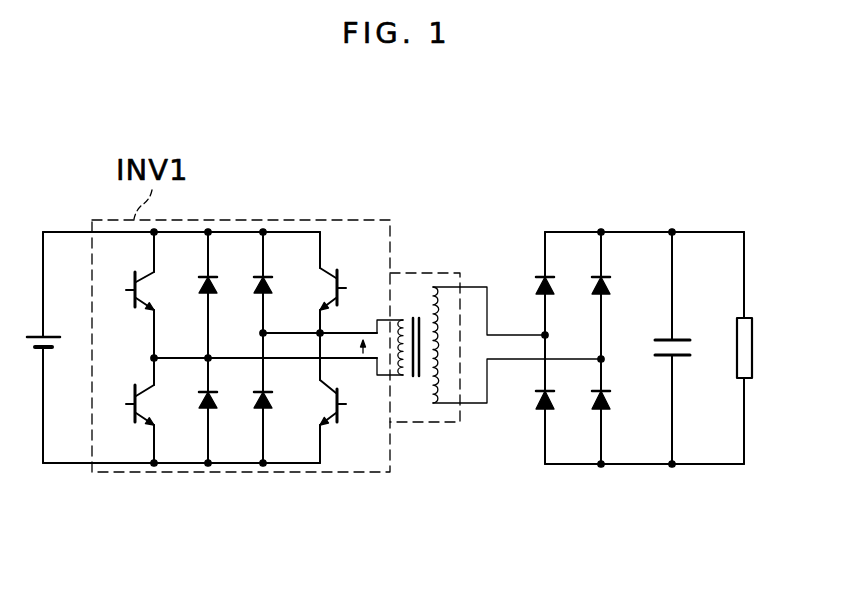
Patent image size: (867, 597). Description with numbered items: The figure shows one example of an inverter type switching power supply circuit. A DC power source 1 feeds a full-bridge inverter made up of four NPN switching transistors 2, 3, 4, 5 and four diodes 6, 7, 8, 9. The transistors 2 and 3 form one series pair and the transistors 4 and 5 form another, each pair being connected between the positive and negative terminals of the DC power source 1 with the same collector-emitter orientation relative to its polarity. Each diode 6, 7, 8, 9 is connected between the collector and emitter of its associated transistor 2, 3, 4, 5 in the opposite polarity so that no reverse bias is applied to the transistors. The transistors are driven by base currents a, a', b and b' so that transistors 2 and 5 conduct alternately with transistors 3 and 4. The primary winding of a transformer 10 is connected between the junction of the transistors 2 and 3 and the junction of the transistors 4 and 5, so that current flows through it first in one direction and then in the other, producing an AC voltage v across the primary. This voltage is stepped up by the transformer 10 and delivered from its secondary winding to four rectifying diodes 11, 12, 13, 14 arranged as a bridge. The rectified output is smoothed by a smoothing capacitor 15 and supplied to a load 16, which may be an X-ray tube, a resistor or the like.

The DC power source 1 is at (55, 333).
The switching element (NPN transistor) 2 is at (133, 274).
The switching element (NPN transistor) 3 is at (128, 416).
The switching element (NPN transistor) 4 is at (342, 278).
The switching element (NPN transistor) 5 is at (343, 417).
The diode 6 is at (195, 288).
The diode 7 is at (197, 414).
The diode 8 is at (276, 287).
The diode 9 is at (268, 410).
The transformer 10 is at (425, 272).
The diode 11 is at (536, 279).
The diode 12 is at (535, 413).
The diode 13 is at (612, 282).
The diode 14 is at (607, 414).
The smoothing capacitor 15 is at (686, 338).
The load 16 is at (758, 342).